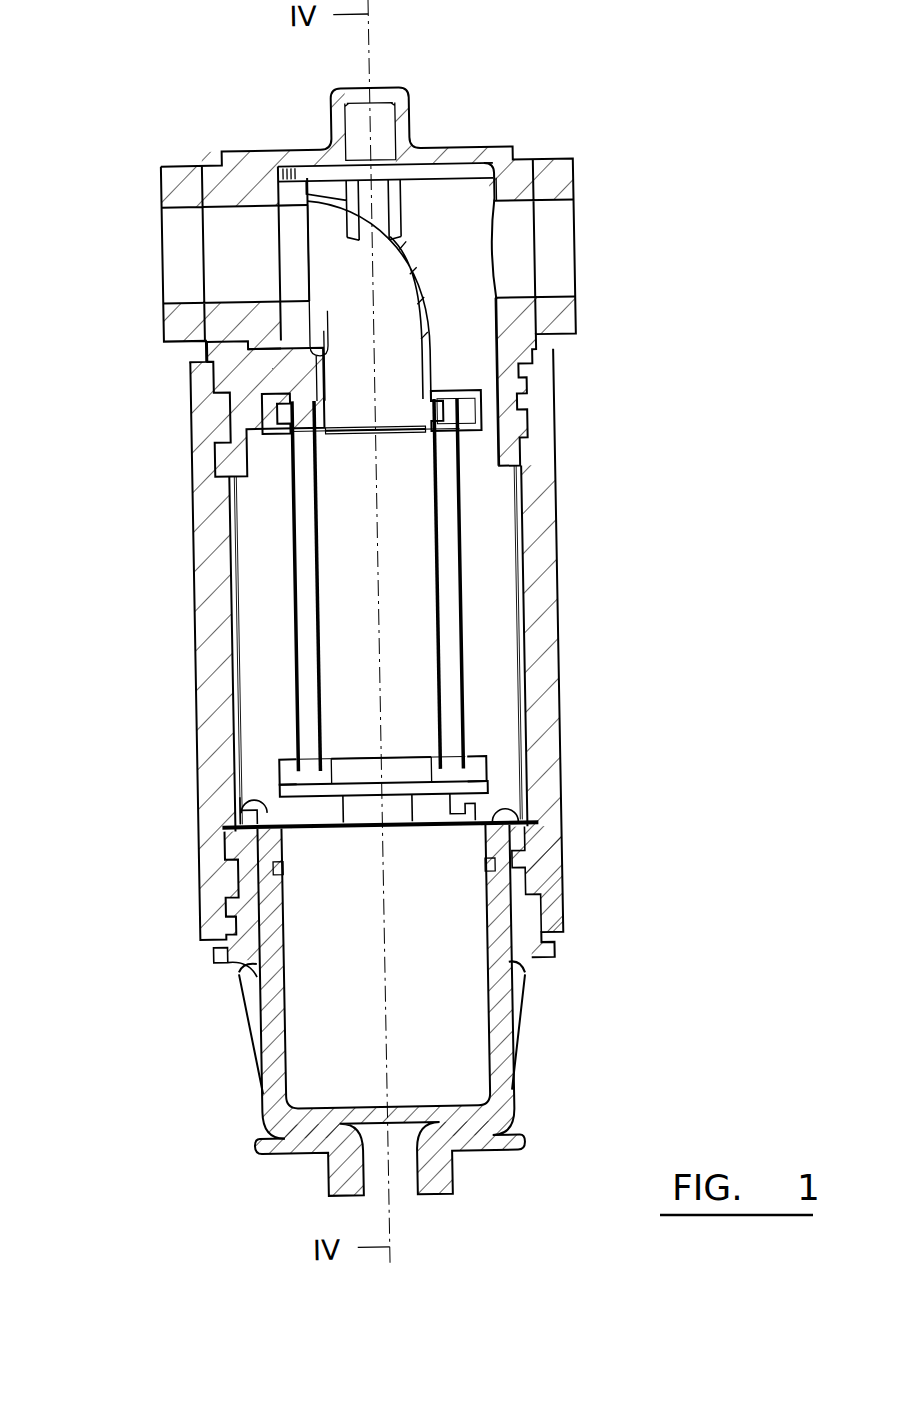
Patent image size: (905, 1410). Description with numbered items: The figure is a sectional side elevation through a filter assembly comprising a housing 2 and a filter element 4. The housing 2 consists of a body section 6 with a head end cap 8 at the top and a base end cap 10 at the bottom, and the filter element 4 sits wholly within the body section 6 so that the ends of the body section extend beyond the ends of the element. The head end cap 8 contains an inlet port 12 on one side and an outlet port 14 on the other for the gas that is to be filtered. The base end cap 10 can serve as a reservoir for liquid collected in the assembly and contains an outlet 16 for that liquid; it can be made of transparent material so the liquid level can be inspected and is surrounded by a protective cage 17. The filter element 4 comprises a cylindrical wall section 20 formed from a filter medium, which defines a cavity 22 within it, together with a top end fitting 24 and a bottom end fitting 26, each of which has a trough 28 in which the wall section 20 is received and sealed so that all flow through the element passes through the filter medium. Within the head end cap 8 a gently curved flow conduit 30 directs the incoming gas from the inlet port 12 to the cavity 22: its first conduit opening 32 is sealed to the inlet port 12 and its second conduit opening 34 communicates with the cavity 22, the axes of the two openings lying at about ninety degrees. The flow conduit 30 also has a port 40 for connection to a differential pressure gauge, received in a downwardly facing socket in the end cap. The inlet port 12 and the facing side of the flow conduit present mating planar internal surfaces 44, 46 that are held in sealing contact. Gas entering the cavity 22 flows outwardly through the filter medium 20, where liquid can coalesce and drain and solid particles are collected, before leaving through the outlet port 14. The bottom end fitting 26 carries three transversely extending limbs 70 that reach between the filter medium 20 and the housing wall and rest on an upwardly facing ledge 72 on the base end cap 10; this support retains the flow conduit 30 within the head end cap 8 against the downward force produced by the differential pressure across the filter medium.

The housing 2 is at (557, 523).
The filter element 4 is at (264, 620).
The body section 6 is at (528, 696).
The head end cap 8 is at (495, 154).
The base end cap 10 is at (494, 1100).
The inlet port 12 is at (148, 208).
The outlet port 14 is at (581, 232).
The outlet 16 is at (382, 1194).
The protective cage 17 is at (517, 1018).
The cylindrical wall section 20 is at (445, 567).
The cavity 22 is at (321, 496).
The top end fitting 24 is at (471, 412).
The bottom end fitting 26 is at (456, 781).
The trough 28 is at (461, 422).
The flow conduit 30 is at (294, 366).
The first conduit opening 32 is at (283, 273).
The second conduit opening 34 is at (400, 431).
The port 40 is at (401, 201).
The planar internal surface 44 is at (281, 243).
The planar internal surface 46 is at (319, 351).
The limbs 70 is at (236, 794).
The ledge 72 is at (474, 815).